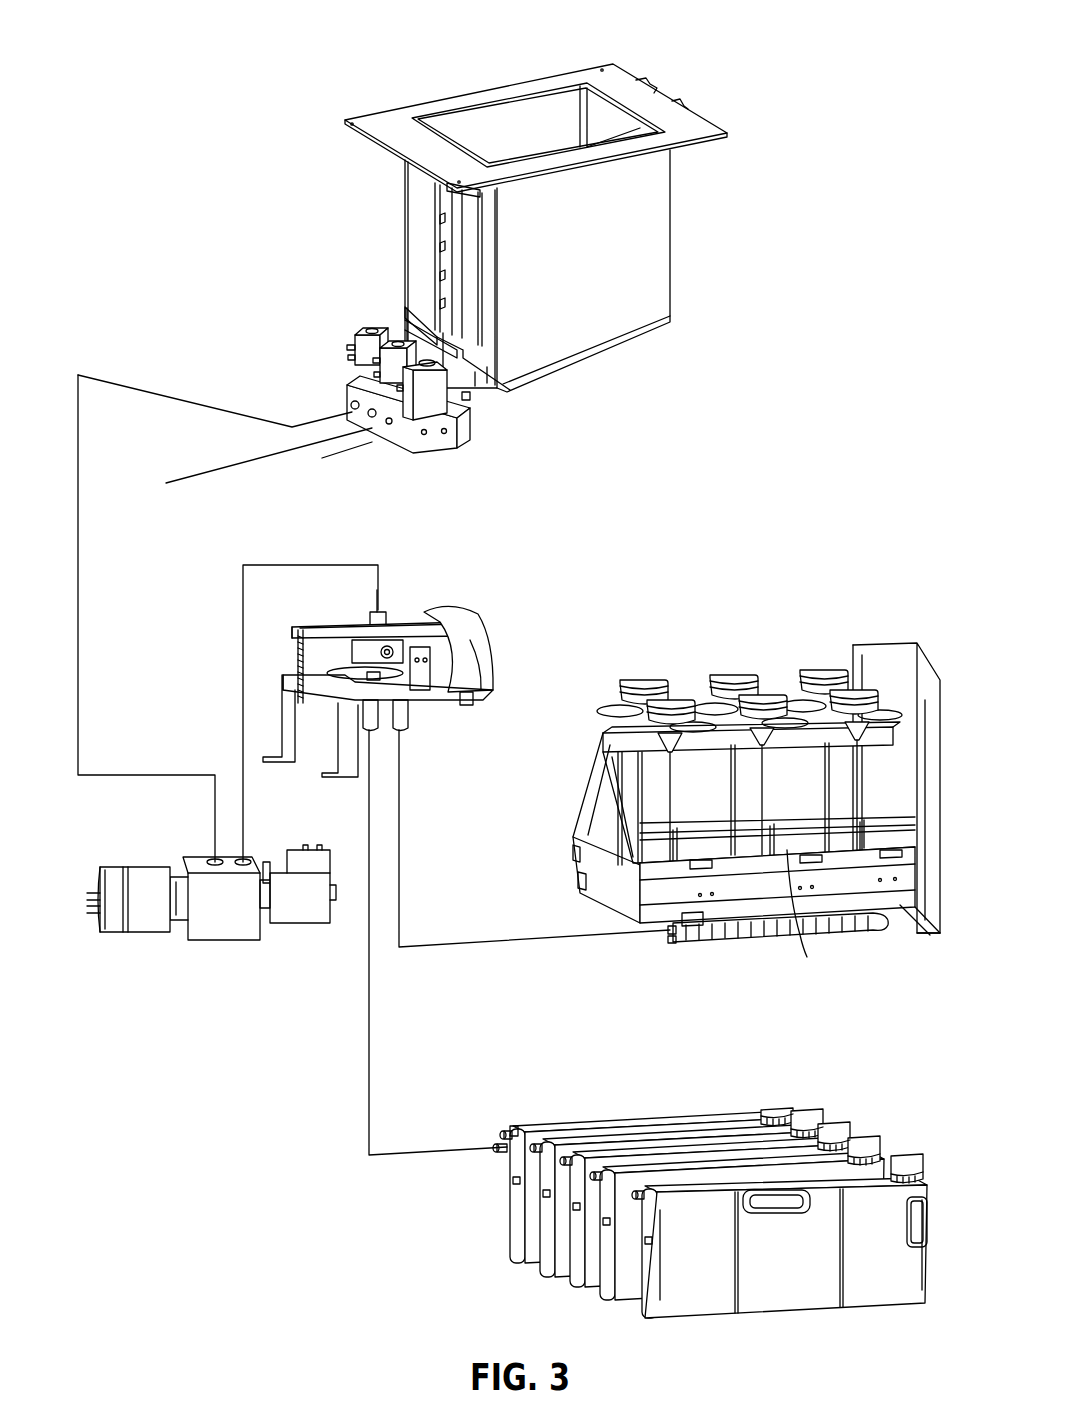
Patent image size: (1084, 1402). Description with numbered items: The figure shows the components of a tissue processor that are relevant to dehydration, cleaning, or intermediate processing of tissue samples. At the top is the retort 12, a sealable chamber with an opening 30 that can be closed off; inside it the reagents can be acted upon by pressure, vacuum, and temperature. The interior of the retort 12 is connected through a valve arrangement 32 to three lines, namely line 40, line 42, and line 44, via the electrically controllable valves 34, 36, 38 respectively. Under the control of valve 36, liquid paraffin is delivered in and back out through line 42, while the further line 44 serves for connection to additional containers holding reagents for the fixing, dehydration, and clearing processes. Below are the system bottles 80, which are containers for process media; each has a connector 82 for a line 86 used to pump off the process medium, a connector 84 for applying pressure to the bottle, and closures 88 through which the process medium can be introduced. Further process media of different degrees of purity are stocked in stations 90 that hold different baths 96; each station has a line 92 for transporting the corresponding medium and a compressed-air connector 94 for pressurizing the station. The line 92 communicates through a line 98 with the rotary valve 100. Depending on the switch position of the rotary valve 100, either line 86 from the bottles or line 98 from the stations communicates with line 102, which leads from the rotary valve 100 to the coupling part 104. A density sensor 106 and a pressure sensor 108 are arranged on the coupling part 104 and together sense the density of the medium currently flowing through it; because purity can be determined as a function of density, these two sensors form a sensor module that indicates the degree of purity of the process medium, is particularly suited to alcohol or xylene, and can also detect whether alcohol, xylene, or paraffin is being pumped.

The retort 12 is at (733, 178).
The opening 30 is at (477, 122).
The valve arrangement 32 is at (437, 436).
The electrically controllable valve 34 is at (364, 334).
The electrically controllable valve 36 is at (391, 345).
The electrically controllable valve 38 is at (432, 393).
The line 40 is at (252, 412).
The line 42 is at (208, 472).
The further line 44 is at (362, 451).
The system bottles 80 is at (700, 1097).
The connector 82 is at (495, 1157).
The connector 84 is at (510, 1131).
The line 86 is at (369, 1010).
The closures 88 is at (775, 1107).
The stations 90 is at (740, 656).
The line 92 is at (668, 930).
The compressed-air connector 94 is at (672, 940).
The baths 96 is at (807, 957).
The line 98 is at (402, 840).
The rotary valve 100 is at (465, 608).
The line 102 is at (243, 642).
The coupling part 104 is at (213, 941).
The density sensor 106 is at (309, 926).
The pressure sensor 108 is at (103, 933).